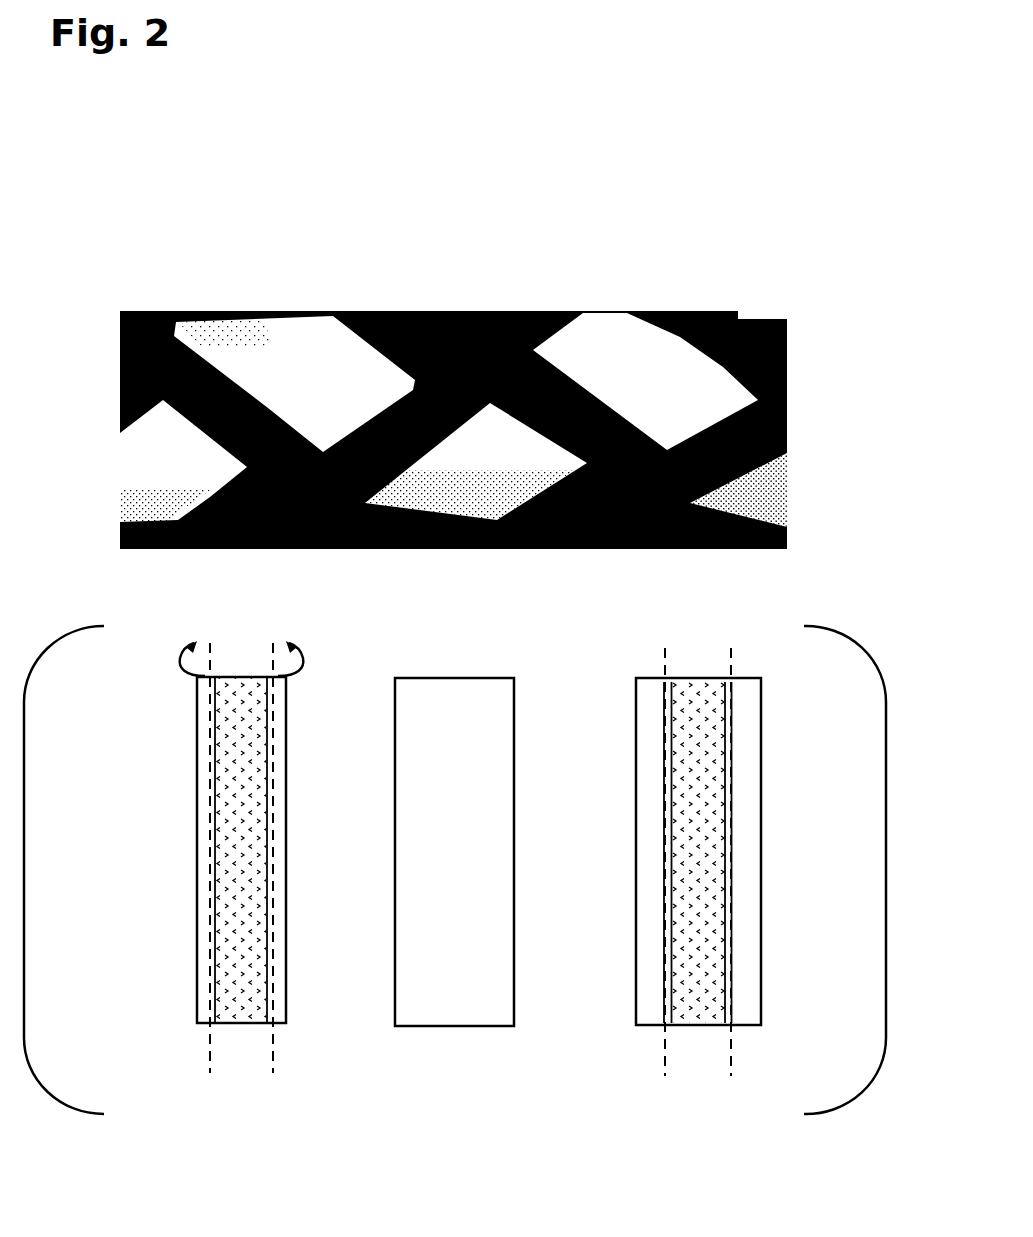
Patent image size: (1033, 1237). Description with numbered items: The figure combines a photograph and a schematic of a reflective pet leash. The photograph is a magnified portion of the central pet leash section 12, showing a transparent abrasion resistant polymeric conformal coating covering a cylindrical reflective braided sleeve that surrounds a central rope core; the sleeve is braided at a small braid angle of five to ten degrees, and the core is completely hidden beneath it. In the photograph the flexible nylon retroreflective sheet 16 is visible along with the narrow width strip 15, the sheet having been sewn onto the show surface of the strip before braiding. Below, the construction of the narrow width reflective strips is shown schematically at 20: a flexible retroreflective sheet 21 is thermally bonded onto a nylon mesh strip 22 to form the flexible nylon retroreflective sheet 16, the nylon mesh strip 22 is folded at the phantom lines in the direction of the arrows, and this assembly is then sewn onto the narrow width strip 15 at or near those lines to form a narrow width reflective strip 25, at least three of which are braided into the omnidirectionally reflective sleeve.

The central pet leash section 12 is at (538, 180).
The narrow width strip 15 is at (535, 345).
The flexible nylon retroreflective sheet 16 is at (268, 350).
The construction of the narrow width reflective strips 20 is at (122, 708).
The flexible retroreflective sheet 21 is at (232, 874).
The nylon mesh strip 22 is at (198, 976).
The narrow width reflective strip 25 is at (632, 724).